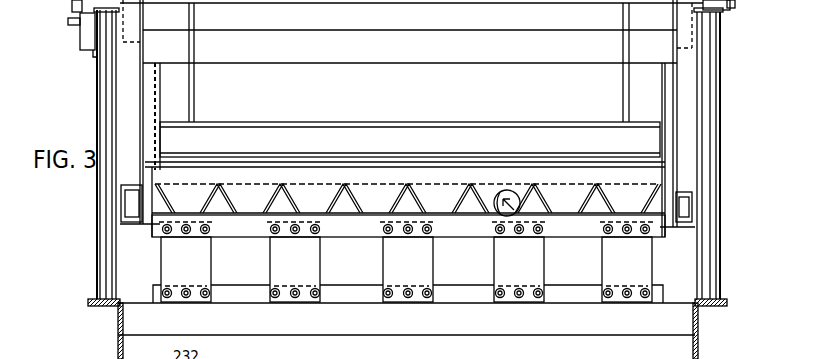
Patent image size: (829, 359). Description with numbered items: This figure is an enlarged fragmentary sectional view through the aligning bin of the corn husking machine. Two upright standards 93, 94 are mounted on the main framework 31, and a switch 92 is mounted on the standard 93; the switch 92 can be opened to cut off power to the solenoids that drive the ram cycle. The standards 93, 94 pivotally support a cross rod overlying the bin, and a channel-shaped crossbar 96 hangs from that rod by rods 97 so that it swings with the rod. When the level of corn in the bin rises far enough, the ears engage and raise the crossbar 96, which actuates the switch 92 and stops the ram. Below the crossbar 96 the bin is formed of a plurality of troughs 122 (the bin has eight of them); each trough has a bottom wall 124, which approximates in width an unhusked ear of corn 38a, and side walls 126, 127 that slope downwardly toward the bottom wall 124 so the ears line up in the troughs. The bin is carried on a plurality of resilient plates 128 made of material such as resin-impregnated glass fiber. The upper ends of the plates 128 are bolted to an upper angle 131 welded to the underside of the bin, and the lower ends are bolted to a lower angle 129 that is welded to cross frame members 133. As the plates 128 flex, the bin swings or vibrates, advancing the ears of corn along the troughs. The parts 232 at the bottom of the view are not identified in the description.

The main framework 31 is at (699, 330).
The unhusked ear of corn 38a is at (497, 193).
The switch 92 is at (82, 42).
The standard 93 is at (100, 105).
The standard 94 is at (700, 211).
The crossbar 96 is at (396, 124).
The rods 97 is at (194, 92).
The troughs 122 is at (192, 198).
The bottom wall 124 is at (312, 213).
The side wall 126 is at (247, 200).
The side wall 127 is at (329, 200).
The resilient plates 128 is at (200, 258).
The lower angle 129 is at (331, 293).
The upper angle 131 is at (446, 228).
The cross frame members 133 is at (475, 330).
The drain pipe 232 is at (301, 358).